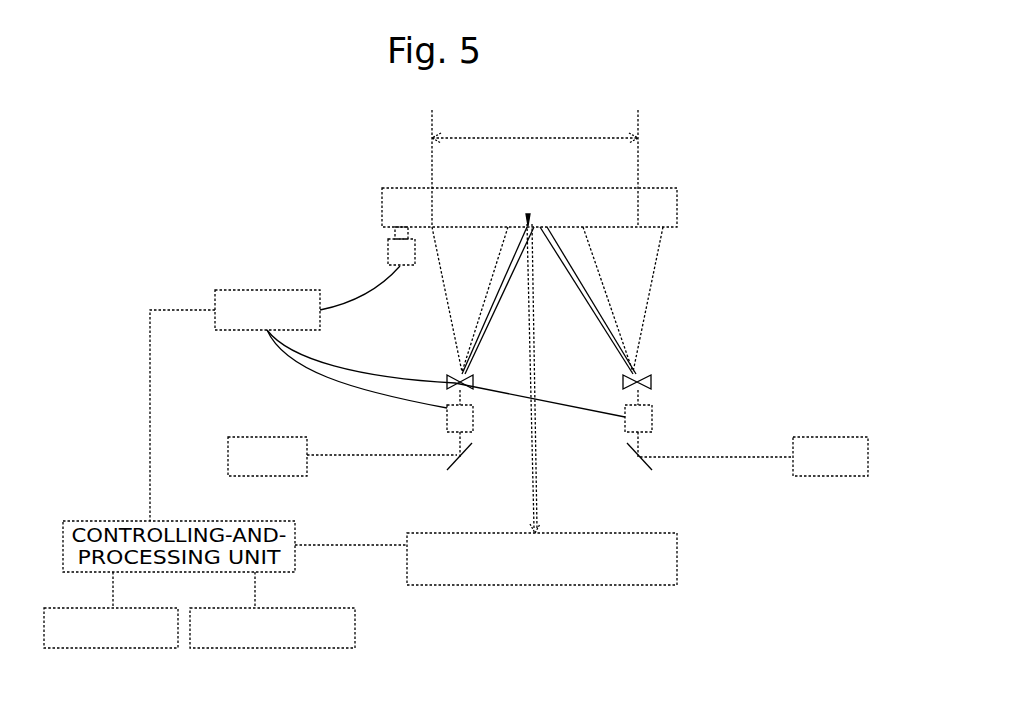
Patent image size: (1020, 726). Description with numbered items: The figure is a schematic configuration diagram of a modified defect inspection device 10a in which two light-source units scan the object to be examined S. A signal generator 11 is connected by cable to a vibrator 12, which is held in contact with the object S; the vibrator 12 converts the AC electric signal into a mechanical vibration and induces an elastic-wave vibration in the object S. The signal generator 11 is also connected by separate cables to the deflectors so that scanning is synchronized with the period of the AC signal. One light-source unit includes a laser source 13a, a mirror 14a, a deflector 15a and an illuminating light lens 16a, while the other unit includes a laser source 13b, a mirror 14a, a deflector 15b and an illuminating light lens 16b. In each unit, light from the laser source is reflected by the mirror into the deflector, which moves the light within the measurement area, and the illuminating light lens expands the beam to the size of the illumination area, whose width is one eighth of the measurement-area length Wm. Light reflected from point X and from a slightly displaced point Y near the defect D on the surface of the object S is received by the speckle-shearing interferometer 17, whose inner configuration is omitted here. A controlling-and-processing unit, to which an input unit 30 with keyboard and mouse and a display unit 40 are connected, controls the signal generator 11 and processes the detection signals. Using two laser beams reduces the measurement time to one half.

The defect inspection device 10a is at (638, 623).
The signal generator 11 is at (240, 290).
The vibrator 12 is at (388, 252).
The laser source 13a is at (250, 437).
The laser source 13b is at (815, 437).
The mirror 14a is at (452, 470).
The deflector 15a is at (447, 425).
The deflector 15b is at (652, 427).
The illuminating light lens 16a is at (447, 380).
The illuminating light lens 16b is at (652, 377).
The speckle-shearing interferometer 17 is at (678, 543).
The input unit 30 is at (140, 648).
The display unit 40 is at (280, 648).
The object to be examined S is at (678, 207).
The length of the measurement area Wm is at (535, 168).
The defect D is at (527, 212).
The point X is at (537, 210).
The point Y is at (520, 220).